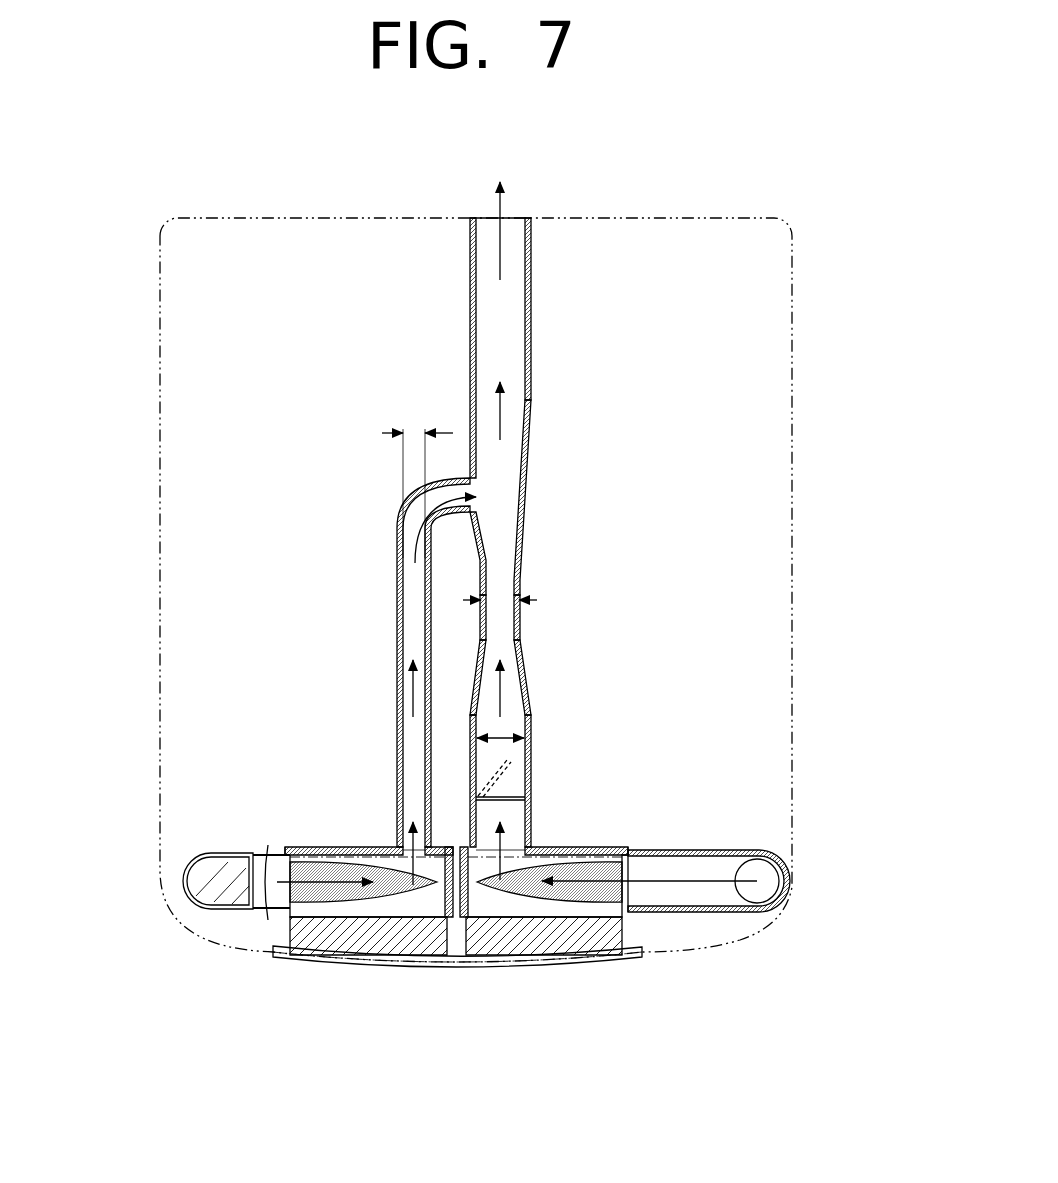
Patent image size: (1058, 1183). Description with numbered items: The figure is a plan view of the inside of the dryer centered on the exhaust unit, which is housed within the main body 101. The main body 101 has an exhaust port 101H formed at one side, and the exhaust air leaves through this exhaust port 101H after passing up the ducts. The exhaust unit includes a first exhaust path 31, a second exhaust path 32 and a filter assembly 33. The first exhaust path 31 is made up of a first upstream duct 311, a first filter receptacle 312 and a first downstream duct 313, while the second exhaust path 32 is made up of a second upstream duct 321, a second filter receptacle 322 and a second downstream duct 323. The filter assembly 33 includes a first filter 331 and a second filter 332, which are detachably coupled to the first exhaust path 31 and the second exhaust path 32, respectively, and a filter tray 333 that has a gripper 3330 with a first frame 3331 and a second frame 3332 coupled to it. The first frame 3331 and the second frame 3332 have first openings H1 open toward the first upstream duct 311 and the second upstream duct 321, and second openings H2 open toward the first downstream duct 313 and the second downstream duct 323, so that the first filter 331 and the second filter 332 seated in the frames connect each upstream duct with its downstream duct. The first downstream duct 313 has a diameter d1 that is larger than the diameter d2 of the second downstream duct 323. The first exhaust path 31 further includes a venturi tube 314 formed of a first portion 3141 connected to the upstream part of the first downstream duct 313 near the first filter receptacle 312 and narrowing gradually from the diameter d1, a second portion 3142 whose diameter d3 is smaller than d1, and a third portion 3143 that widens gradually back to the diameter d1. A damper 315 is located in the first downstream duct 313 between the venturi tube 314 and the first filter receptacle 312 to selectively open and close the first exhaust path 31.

The main body 101 is at (740, 218).
The exhaust port 101H is at (513, 218).
The first exhaust path 31 is at (847, 485).
The first upstream duct 311 is at (727, 850).
The first filter receptacle 312 is at (610, 848).
The first downstream duct 313 is at (531, 425).
The venturi tube 314 is at (697, 552).
The first portion 3141 is at (527, 673).
The second portion 3142 is at (518, 572).
The third portion 3143 is at (525, 508).
The damper 315 is at (510, 789).
The second exhaust path 32 is at (82, 682).
The second upstream duct 321 is at (200, 870).
The second filter receptacle 322 is at (313, 845).
The second downstream duct 323 is at (397, 690).
The filter assembly 33 is at (343, 1078).
The first filter 331 is at (566, 893).
The second filter 332 is at (322, 893).
The filter tray 333 is at (383, 1040).
The gripper 3330 is at (445, 960).
The first frame 3331 is at (500, 947).
The second frame 3332 is at (380, 947).
The first openings H1 is at (283, 892).
The second openings H2 is at (408, 847).
The diameter of first downstream duct d1 is at (527, 737).
The diameter of second downstream duct d2 is at (417, 476).
The diameter of second portion d3 is at (500, 598).